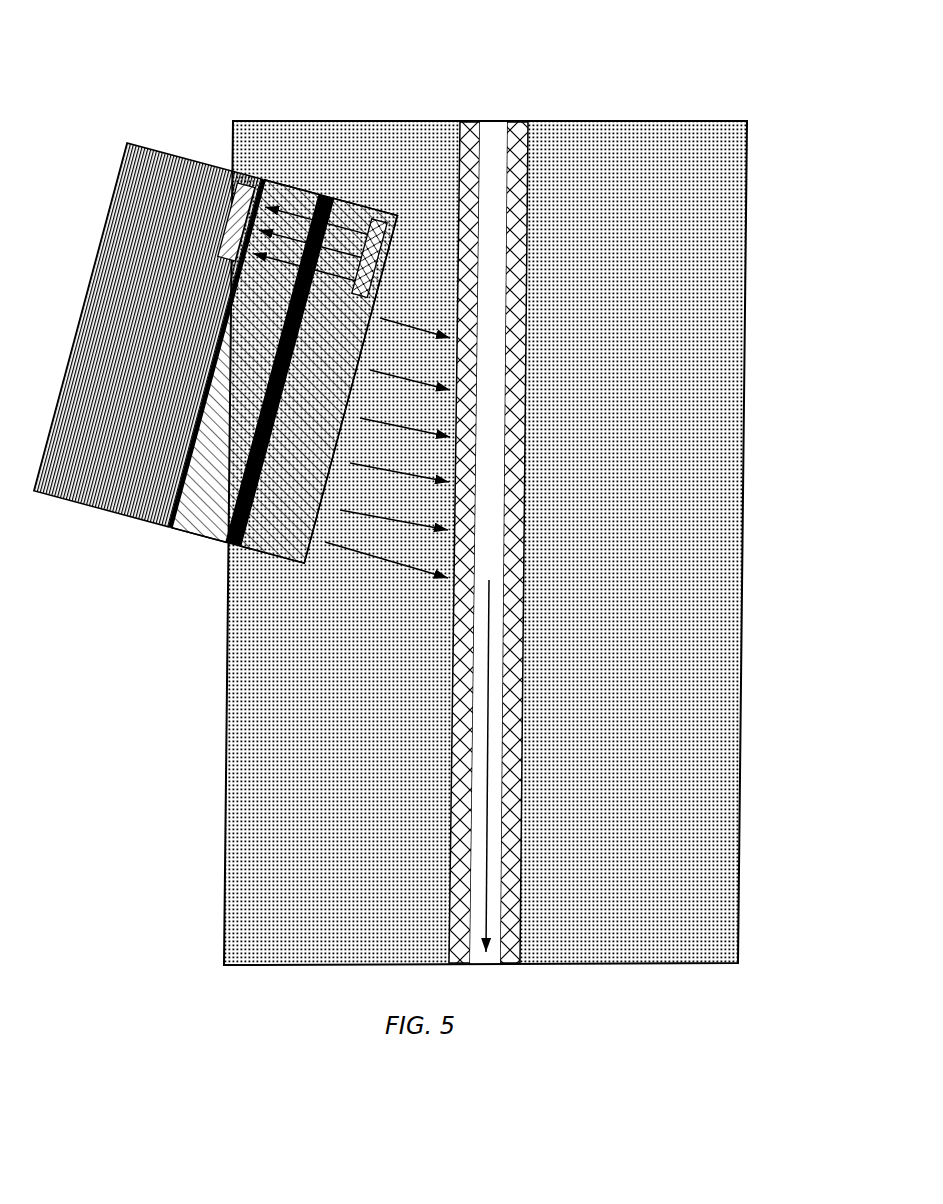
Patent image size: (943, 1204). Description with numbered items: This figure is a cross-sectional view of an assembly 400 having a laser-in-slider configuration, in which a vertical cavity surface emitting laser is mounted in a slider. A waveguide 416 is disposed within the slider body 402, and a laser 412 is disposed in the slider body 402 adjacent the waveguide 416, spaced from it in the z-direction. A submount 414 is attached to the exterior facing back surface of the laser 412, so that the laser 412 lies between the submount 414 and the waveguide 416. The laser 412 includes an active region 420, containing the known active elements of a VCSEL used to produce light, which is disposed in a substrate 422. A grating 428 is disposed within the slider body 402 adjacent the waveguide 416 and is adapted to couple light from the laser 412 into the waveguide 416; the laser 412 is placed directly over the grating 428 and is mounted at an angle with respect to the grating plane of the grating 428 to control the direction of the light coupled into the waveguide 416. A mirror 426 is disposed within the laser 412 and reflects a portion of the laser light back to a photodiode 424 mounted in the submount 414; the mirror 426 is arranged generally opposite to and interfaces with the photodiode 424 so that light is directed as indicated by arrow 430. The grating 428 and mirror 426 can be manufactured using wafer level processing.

The assembly 400 is at (142, 78).
The slider body 402 is at (687, 423).
The laser 412 is at (216, 353).
The submount 414 is at (148, 335).
The waveguide 416 is at (490, 503).
The active region 420 is at (280, 371).
The substrate 422 is at (245, 361).
The photodiode 424 is at (310, 244).
The mirror 426 is at (369, 258).
The grating 428 is at (463, 557).
The arrow 430 is at (319, 380).